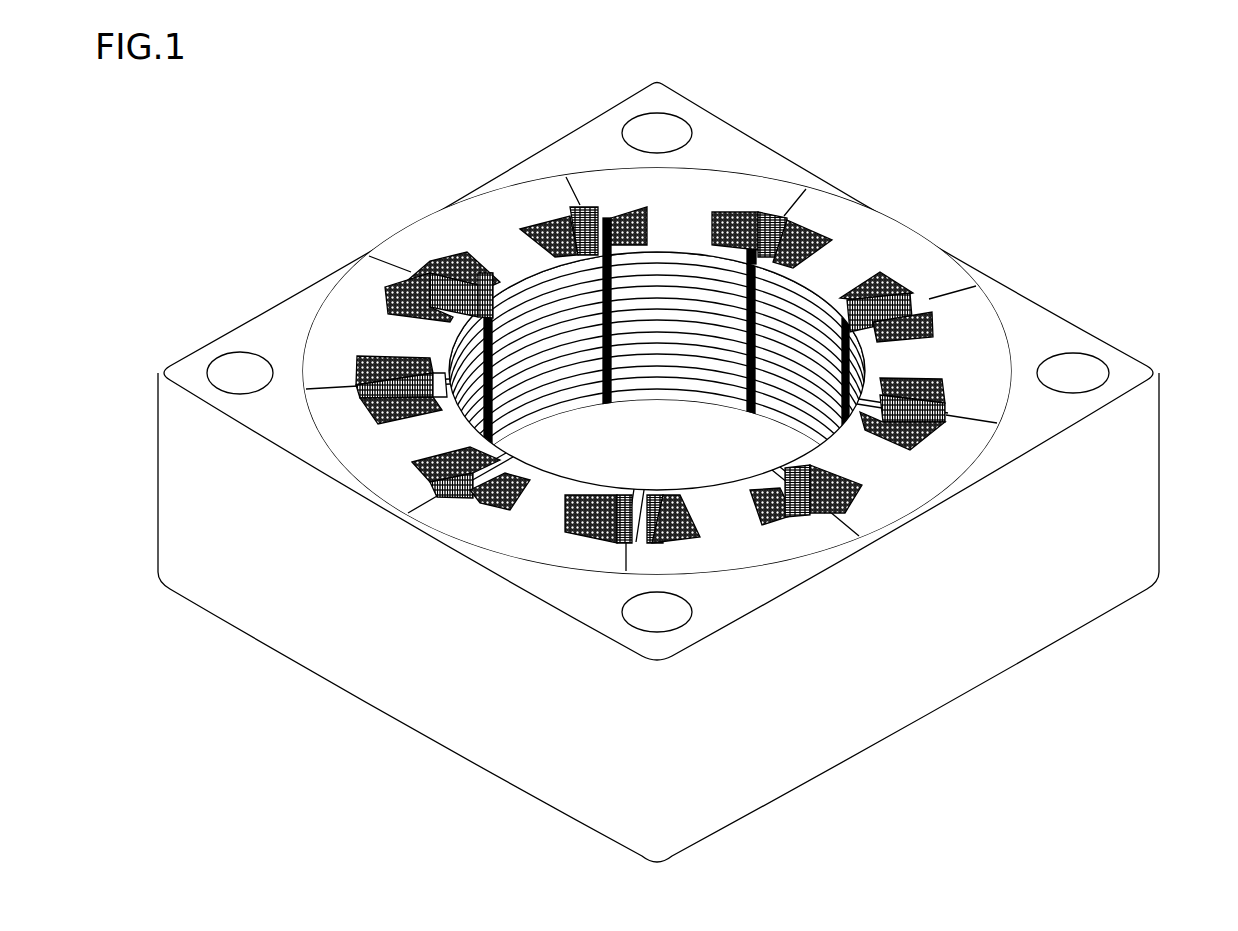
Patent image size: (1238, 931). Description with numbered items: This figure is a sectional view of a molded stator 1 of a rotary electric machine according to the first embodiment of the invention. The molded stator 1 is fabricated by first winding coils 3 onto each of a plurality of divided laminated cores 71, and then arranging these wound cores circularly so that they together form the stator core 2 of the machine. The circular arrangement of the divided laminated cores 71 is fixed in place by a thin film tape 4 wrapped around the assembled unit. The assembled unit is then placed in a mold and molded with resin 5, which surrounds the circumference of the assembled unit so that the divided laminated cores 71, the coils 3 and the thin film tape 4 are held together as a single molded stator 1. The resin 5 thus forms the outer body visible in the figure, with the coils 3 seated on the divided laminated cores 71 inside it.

The molded stator 1 is at (1045, 285).
The stator core 2 is at (440, 233).
The coils 3 is at (788, 213).
The thin film tape 4 is at (312, 343).
The resin 5 is at (1045, 587).
The divided laminated cores 71 is at (607, 190).